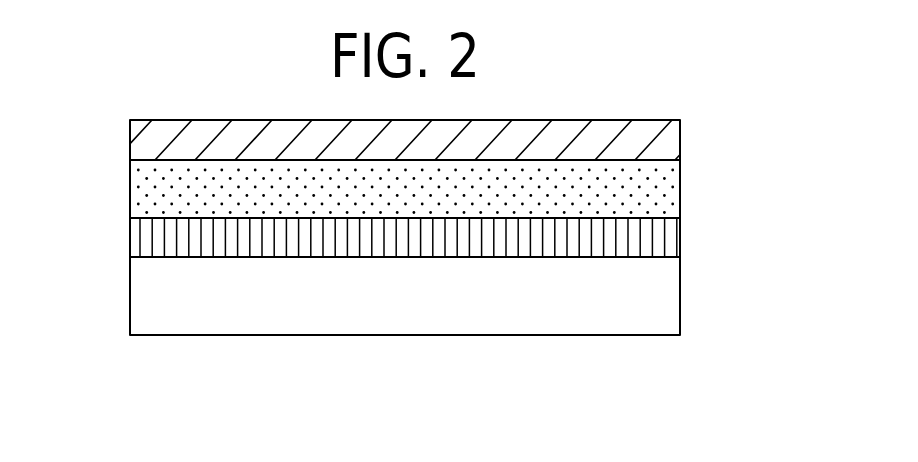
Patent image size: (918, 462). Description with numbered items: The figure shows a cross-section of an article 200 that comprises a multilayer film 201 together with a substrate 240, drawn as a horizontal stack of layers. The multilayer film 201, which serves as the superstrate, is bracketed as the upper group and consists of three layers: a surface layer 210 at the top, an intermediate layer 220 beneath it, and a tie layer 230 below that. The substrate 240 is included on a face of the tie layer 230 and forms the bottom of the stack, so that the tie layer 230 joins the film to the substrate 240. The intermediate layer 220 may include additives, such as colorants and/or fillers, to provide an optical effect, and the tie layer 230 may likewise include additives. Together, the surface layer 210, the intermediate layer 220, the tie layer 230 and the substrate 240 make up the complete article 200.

The article 200 is at (687, 120).
The multilayer film 201 is at (118, 120).
The surface layer 210 is at (176, 143).
The intermediate layer 220 is at (590, 187).
The tie layer 230 is at (157, 250).
The substrate 240 is at (382, 315).